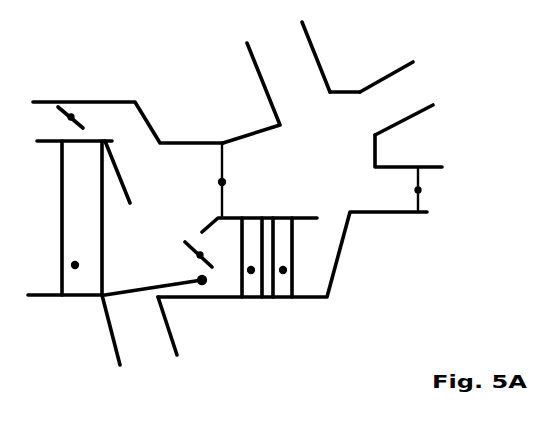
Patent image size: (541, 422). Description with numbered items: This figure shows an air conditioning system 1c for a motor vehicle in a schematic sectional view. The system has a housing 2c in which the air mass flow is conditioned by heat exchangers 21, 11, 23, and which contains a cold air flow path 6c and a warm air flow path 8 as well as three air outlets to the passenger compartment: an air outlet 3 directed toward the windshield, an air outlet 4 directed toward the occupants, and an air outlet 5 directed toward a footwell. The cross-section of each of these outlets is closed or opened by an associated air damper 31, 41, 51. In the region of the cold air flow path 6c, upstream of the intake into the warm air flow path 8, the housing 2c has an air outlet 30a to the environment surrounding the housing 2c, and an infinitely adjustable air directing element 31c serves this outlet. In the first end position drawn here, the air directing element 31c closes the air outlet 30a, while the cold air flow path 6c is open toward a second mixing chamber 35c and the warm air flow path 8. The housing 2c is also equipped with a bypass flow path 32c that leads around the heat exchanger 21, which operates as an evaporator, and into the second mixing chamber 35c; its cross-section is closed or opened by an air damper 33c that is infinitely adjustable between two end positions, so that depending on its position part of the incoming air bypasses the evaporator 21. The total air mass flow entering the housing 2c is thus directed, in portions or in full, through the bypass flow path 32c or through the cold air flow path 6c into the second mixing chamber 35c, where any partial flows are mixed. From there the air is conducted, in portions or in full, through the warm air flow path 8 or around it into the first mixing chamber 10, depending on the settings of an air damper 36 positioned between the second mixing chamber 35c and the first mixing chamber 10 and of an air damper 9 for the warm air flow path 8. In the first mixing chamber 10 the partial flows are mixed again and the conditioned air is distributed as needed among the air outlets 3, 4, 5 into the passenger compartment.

The air conditioning system 1c is at (478, 130).
The housing 2c is at (250, 135).
The air outlet directed toward the windshield 3 is at (290, 97).
The air outlet directed toward the occupants 4 is at (361, 118).
The air outlet directed toward a footwell 5 is at (385, 198).
The cold air flow path 6c is at (128, 240).
The warm air flow path 8 is at (310, 263).
The air damper for warm air flow path 9 is at (200, 255).
The first mixing chamber 10 is at (338, 171).
The heat exchanger 11 is at (251, 270).
The heat exchanger operating as an evaporator 21 is at (75, 265).
The heat exchanger 23 is at (283, 270).
The air outlet to the environment 30a is at (124, 336).
The air damper 31 is at (272, 70).
The air directing element 31c is at (183, 292).
The bypass flow path 32c is at (89, 131).
The air damper for bypass flow path 33c is at (72, 116).
The second mixing chamber 35c is at (193, 208).
The air damper between second and first mixing chambers 36 is at (222, 180).
The air damper 41 is at (383, 103).
The air damper 51 is at (418, 190).